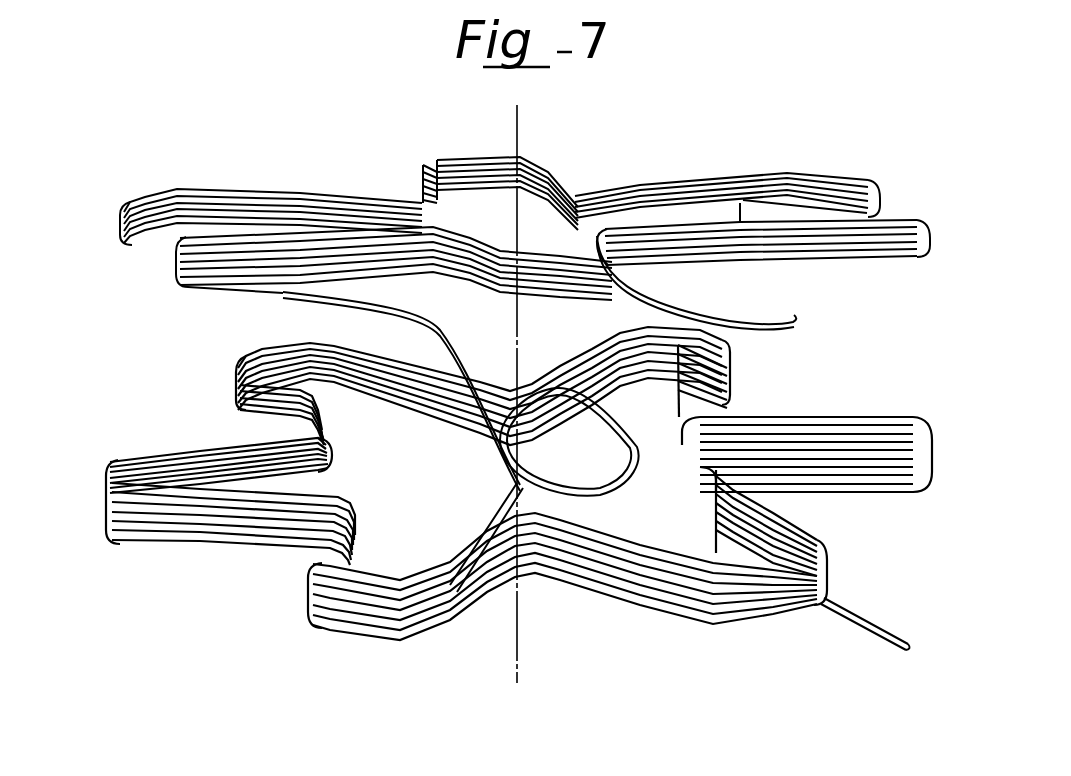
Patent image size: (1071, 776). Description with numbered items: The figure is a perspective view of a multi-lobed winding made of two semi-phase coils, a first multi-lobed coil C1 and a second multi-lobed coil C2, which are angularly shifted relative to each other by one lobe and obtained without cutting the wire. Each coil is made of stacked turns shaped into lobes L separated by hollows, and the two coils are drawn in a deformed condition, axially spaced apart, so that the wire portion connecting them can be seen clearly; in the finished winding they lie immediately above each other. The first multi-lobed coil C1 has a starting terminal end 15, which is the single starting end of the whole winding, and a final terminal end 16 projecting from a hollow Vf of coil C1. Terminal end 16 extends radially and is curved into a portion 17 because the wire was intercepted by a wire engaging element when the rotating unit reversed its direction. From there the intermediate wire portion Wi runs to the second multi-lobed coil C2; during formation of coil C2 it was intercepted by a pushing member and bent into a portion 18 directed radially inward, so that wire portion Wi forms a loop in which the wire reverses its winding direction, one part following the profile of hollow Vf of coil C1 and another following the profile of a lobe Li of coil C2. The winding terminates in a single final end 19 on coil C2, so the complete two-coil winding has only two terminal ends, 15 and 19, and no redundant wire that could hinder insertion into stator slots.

The first multi-lobed coil C1 is at (912, 412).
The second multi-lobed coil C2 is at (862, 168).
The lobe L is at (174, 549).
The inner vertical portion Vi is at (424, 232).
The lobe of the second multi-lobed coil Li is at (572, 270).
The hollow of the first multi-lobed coil Vf is at (512, 576).
The intermediate wire portion Wi is at (581, 482).
The starting terminal end 15 is at (873, 627).
The final terminal end 16 is at (611, 426).
The curved portion 17 is at (607, 446).
The radially inward bent portion 18 is at (478, 375).
The final end 19 is at (680, 303).